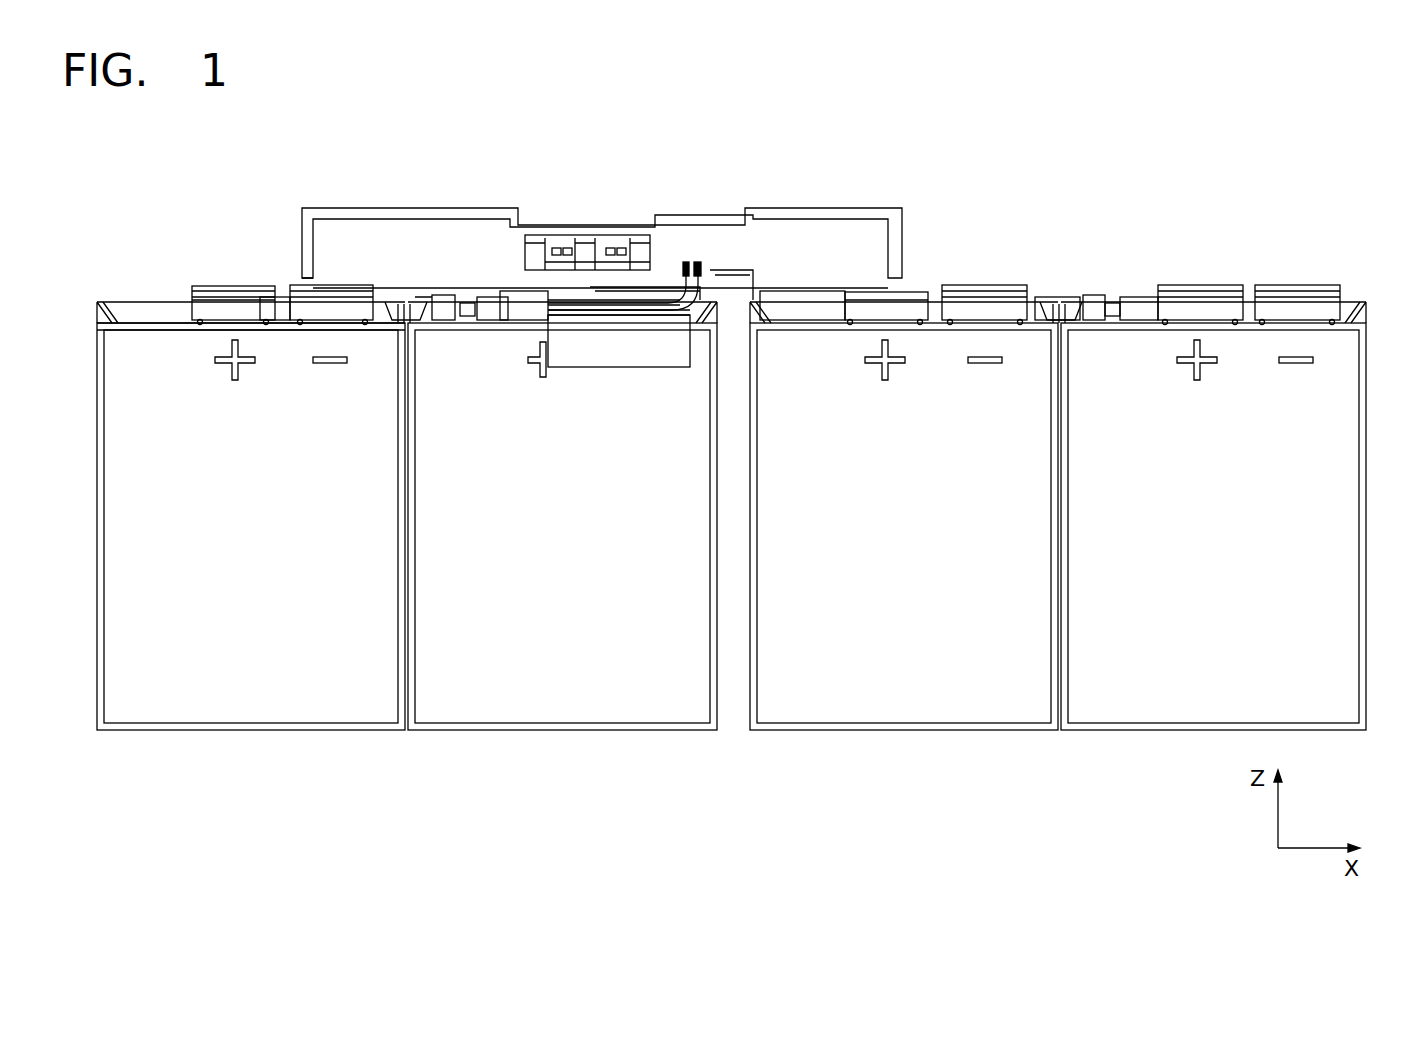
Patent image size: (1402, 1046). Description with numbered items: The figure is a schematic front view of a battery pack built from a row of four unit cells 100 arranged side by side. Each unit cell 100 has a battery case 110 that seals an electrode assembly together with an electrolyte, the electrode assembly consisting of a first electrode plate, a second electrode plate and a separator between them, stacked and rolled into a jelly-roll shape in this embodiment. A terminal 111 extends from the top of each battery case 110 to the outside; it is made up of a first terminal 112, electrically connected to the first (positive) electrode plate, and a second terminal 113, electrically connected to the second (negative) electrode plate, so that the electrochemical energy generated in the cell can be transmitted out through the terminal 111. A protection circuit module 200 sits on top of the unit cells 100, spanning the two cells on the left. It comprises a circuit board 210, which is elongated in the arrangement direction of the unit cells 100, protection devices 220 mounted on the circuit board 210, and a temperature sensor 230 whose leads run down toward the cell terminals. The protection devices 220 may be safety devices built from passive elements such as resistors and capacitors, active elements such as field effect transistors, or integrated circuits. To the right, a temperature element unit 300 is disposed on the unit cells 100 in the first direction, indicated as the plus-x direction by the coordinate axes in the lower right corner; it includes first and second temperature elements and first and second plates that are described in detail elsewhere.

The unit cell 100 is at (699, 566).
The battery case 110 is at (148, 494).
The terminal 111 is at (272, 210).
The first terminal 112 is at (213, 305).
The second terminal 113 is at (305, 305).
The protection circuit module 200 is at (602, 204).
The circuit board 210 is at (443, 243).
The protection device 220 is at (600, 253).
The temperature sensor 230 is at (687, 262).
The temperature element unit 300 is at (1058, 291).